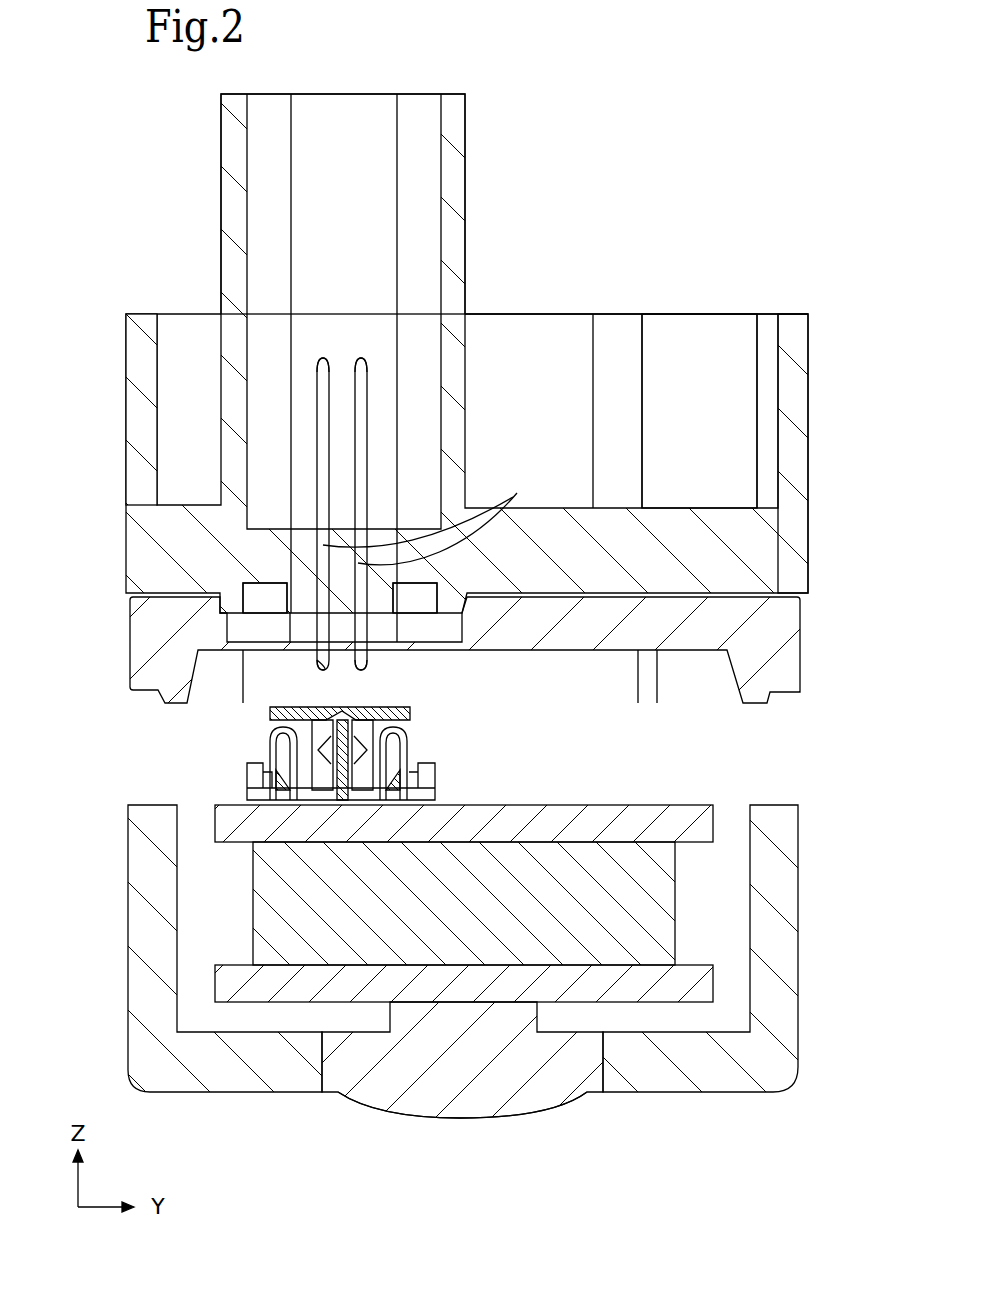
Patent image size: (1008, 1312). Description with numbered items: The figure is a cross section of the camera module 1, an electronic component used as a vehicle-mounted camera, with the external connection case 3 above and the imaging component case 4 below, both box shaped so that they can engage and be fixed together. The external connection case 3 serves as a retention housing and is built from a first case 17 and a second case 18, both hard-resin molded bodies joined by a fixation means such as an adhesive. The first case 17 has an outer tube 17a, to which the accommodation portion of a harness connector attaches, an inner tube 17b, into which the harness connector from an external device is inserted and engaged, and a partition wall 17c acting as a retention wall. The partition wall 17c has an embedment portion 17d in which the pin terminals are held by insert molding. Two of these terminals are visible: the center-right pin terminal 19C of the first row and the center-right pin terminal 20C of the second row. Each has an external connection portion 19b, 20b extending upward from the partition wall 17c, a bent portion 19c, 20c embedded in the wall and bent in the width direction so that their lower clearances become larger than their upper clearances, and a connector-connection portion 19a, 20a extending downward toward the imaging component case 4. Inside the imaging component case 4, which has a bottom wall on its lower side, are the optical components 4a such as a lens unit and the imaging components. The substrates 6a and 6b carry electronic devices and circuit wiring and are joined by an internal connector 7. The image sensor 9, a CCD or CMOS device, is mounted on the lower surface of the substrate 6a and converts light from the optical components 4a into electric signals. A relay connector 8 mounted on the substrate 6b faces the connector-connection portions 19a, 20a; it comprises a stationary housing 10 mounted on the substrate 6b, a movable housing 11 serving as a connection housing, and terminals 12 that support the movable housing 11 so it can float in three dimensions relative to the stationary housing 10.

The camera module 1 is at (137, 166).
The external connection case 3 is at (790, 314).
The imaging component case 4 is at (798, 935).
The optical components 4a is at (553, 1113).
The substrate 6a is at (215, 979).
The substrate 6b is at (215, 821).
The internal connector 7 is at (253, 901).
The relay connector 8 is at (360, 753).
The image sensor 9 is at (438, 1032).
The stationary housing 10 is at (247, 795).
The movable housing 11 is at (270, 711).
The terminals 12 is at (270, 745).
The first case 17 is at (126, 512).
The outer tube 17a is at (808, 388).
The inner tube 17b is at (465, 230).
The partition wall 17c is at (700, 506).
The embedment portion 17d is at (514, 498).
The second case 18 is at (130, 645).
The center-right pin terminal 19C is at (322, 357).
The connector-connection portion 19a is at (320, 668).
The external connection portion 19b is at (317, 446).
The bent portion 19c is at (265, 598).
The center-right pin terminal 20C is at (362, 357).
The connector-connection portion 20a is at (362, 668).
The external connection portion 20b is at (367, 446).
The bent portion 20c is at (415, 598).